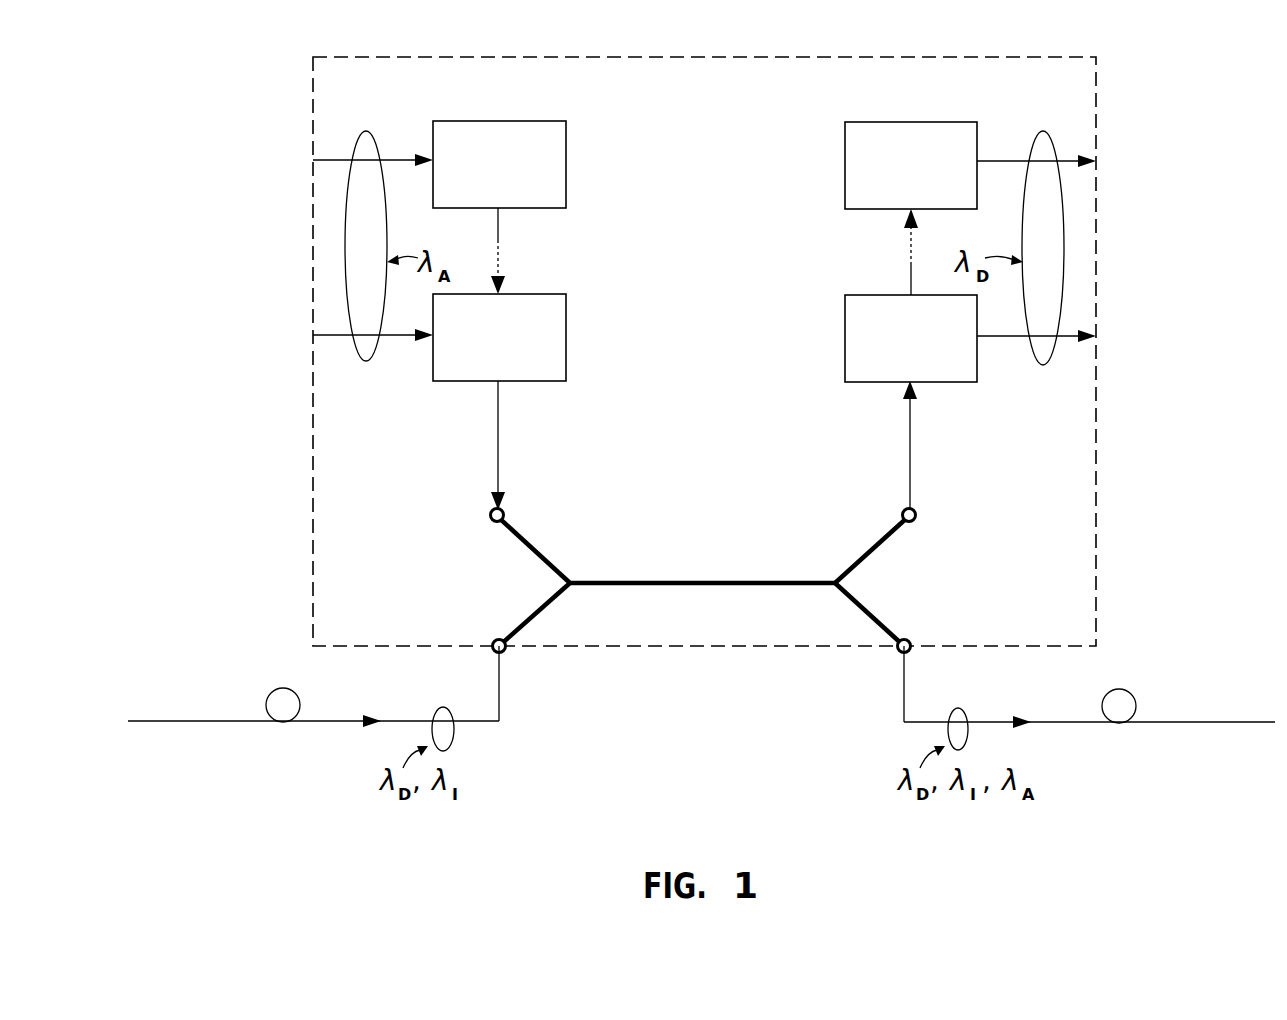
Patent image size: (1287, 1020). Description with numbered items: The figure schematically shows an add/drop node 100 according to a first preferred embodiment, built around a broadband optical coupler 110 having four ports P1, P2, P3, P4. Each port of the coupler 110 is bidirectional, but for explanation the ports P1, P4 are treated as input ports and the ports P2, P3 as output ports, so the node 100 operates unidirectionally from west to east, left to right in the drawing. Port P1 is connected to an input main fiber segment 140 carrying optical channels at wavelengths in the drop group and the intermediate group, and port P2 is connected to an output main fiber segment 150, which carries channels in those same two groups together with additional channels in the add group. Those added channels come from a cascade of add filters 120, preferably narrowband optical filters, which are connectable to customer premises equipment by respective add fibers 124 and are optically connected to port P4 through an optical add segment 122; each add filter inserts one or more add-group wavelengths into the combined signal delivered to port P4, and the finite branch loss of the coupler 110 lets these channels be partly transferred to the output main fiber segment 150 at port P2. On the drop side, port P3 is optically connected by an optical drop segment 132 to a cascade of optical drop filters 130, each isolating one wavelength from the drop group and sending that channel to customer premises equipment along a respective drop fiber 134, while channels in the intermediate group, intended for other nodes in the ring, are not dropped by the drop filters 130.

The add/drop node 100 is at (1085, 94).
The broadband optical coupler 110 is at (738, 585).
The add filters 120 is at (520, 194).
The optical add segment 122 is at (499, 440).
The add fibers 124 is at (429, 166).
The optical drop filters 130 is at (931, 195).
The optical drop segment 132 is at (911, 440).
The drop fibers 134 is at (985, 166).
The input main fiber segment 140 is at (184, 723).
The output main fiber segment 150 is at (1218, 724).
The port P1 is at (494, 640).
The port P2 is at (908, 640).
The port P3 is at (916, 522).
The port P4 is at (491, 520).